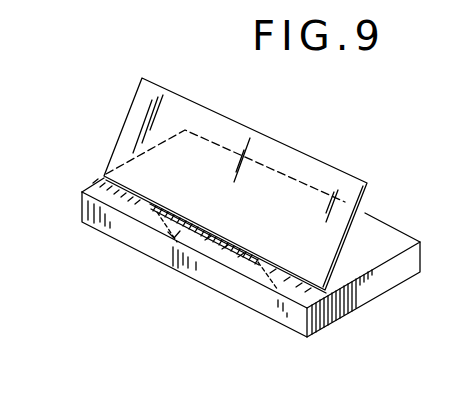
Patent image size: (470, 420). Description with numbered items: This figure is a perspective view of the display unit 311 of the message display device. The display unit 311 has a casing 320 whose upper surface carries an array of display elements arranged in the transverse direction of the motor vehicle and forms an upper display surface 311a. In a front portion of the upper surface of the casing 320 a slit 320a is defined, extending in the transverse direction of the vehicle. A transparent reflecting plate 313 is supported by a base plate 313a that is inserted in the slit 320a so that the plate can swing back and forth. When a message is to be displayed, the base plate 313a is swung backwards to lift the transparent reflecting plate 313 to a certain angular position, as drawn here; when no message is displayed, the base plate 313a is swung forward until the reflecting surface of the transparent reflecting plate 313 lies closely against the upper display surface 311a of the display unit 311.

The display unit 311 is at (393, 242).
The upper display surface 311a is at (282, 193).
The transparent reflecting plate 313 is at (135, 118).
The base plate 313a is at (250, 268).
The casing 320 is at (370, 287).
The slit 320a is at (173, 237).